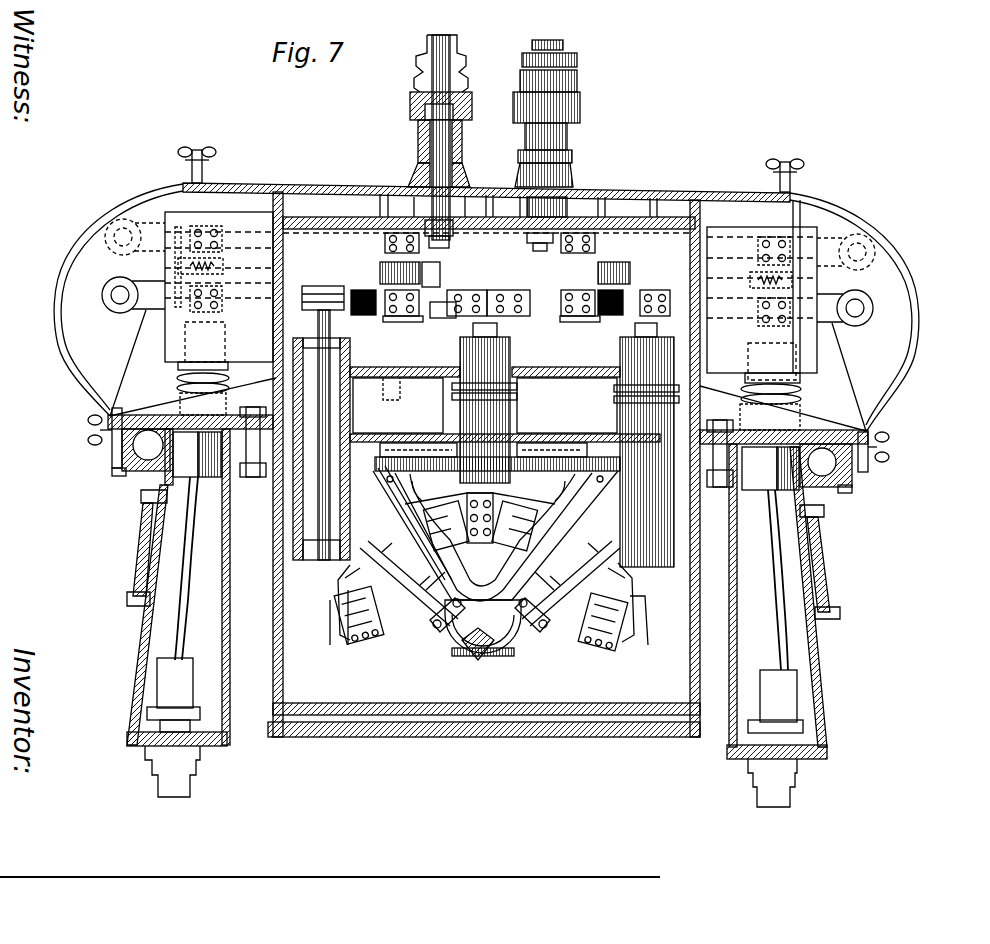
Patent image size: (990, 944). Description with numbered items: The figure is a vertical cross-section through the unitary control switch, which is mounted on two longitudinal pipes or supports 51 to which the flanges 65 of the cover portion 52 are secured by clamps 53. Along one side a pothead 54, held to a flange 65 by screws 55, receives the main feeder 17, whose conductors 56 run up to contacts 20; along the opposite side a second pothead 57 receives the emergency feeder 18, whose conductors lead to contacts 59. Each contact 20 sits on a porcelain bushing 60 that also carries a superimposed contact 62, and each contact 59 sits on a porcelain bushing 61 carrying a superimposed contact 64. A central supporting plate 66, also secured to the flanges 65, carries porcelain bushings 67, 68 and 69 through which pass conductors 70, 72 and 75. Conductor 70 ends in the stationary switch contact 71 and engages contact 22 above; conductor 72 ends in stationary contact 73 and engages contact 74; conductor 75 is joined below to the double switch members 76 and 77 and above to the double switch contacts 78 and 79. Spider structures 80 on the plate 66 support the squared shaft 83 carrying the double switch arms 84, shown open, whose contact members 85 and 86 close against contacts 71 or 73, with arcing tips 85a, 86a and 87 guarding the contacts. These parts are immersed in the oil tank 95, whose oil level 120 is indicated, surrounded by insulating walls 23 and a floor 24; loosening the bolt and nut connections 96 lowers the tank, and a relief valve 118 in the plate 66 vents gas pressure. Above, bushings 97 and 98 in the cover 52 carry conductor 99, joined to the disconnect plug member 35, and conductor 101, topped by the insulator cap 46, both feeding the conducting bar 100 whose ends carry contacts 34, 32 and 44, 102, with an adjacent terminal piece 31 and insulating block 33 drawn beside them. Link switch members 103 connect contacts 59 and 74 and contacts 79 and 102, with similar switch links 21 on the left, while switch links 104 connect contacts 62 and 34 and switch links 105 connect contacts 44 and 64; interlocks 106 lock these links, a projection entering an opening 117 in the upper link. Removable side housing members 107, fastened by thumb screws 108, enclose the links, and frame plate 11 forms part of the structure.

The frame plate 11 is at (795, 212).
The main feeder 17 is at (158, 783).
The emergency feeder 18 is at (796, 793).
The contact 20 is at (222, 318).
The switch link 21 is at (101, 296).
The contact 22 is at (320, 286).
The wall 23 is at (328, 650).
The floor 24 is at (566, 737).
The terminal piece 31 is at (432, 310).
The contact 32 is at (405, 322).
The insulating block 33 is at (380, 275).
The contact 34 is at (443, 249).
The disconnect plug member 35 is at (410, 100).
The contact 44 is at (598, 229).
The insulator cap 46 is at (580, 99).
The pipe or support 51 is at (118, 452).
The cover portion 52 is at (323, 185).
The clamp 53 is at (112, 470).
The pothead 54 is at (140, 640).
The screw 55 is at (188, 440).
The conductor 56 is at (140, 560).
The pothead 57 is at (822, 652).
The contact 59 is at (757, 320).
The porcelain bushing 60 is at (177, 379).
The porcelain bushing 61 is at (801, 394).
The superimposed contact 62 is at (212, 230).
The superimposed contact 64 is at (772, 240).
The flange 65 is at (266, 480).
The central supporting plate 66 is at (548, 434).
The porcelain bushing 67 is at (383, 497).
The porcelain bushing 68 is at (628, 513).
The porcelain bushing 69 is at (510, 352).
The conductor 70 is at (293, 522).
The stationary switch contact 71 is at (358, 646).
The conductor 72 is at (675, 576).
The stationary contact 73 is at (615, 650).
The contact 74 is at (656, 290).
The conductor 75 is at (498, 491).
The double switch member 76 is at (458, 540).
The double switch member 77 is at (503, 540).
The double switch contact 78 is at (470, 290).
The double switch contact 79 is at (510, 290).
The spider structure 80 is at (402, 518).
The squared shaft 83 is at (498, 670).
The double switch arm 84 is at (445, 628).
The switch contact member 85 is at (378, 548).
The arcing tip 85a is at (353, 602).
The switch contact member 86 is at (596, 556).
The arcing tip 86a is at (660, 615).
The arcing tip 87 is at (422, 499).
The oil tank 95 is at (402, 737).
The bolt and nut connection 96 is at (252, 478).
The porcelain bushing 97 is at (418, 132).
The porcelain bushing 98 is at (568, 137).
The conductor 99 is at (451, 137).
The conducting bar 100 is at (527, 240).
The conductor 101 is at (566, 214).
The contact 102 is at (578, 322).
The link switch member 103 is at (874, 308).
The switch link 104 is at (150, 230).
The switch link 105 is at (838, 245).
The interlock 106 is at (167, 265).
The side housing member 107 is at (62, 248).
The thumb screw 108 is at (200, 150).
The opening 117 is at (422, 290).
The relief valve 118 is at (392, 385).
The oil level 120 is at (432, 443).